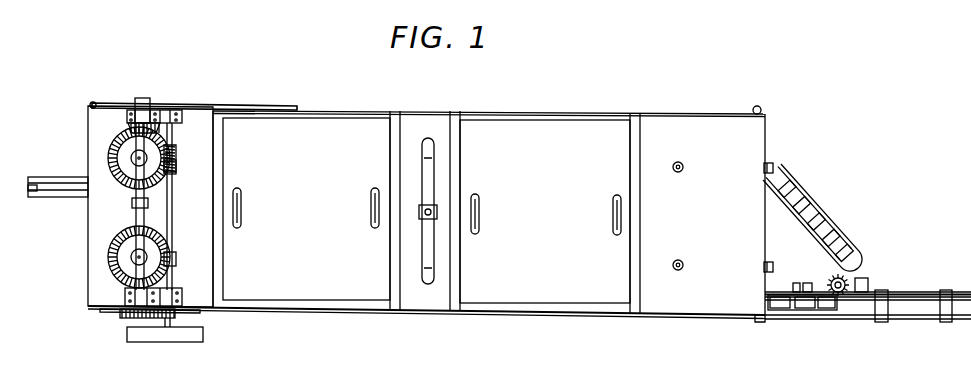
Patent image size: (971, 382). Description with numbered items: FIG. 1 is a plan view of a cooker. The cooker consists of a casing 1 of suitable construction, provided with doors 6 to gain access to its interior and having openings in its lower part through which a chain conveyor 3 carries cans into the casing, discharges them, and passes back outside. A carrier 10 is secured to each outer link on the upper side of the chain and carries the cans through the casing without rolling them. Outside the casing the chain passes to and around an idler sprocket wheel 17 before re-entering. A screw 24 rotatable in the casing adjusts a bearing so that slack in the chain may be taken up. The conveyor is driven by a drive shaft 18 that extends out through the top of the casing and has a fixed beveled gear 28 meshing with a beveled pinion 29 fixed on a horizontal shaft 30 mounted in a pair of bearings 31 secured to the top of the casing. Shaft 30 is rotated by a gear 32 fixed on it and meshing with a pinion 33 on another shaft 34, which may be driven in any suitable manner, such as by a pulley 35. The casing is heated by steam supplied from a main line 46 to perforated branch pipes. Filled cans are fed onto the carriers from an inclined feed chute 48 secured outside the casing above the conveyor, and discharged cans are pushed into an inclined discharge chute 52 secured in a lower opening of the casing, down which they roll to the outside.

The casing 1 is at (420, 297).
The chain conveyor 3 is at (800, 303).
The doors 6 is at (550, 148).
The carrier 10 is at (825, 217).
The idler sprocket wheel 17 is at (842, 275).
The drive shaft 18 is at (133, 262).
The screw 24 is at (772, 168).
The beveled gear 28 is at (172, 167).
The beveled pinion 29 is at (130, 125).
The horizontal shaft 30 is at (136, 204).
The bearings 31 is at (143, 105).
The gear 32 is at (120, 315).
The pinion 33 is at (176, 313).
The shaft 34 is at (172, 140).
The pulley 35 is at (187, 333).
The main line 46 is at (427, 243).
The inclined feed chute 48 is at (903, 292).
The inclined discharge chute 52 is at (57, 178).